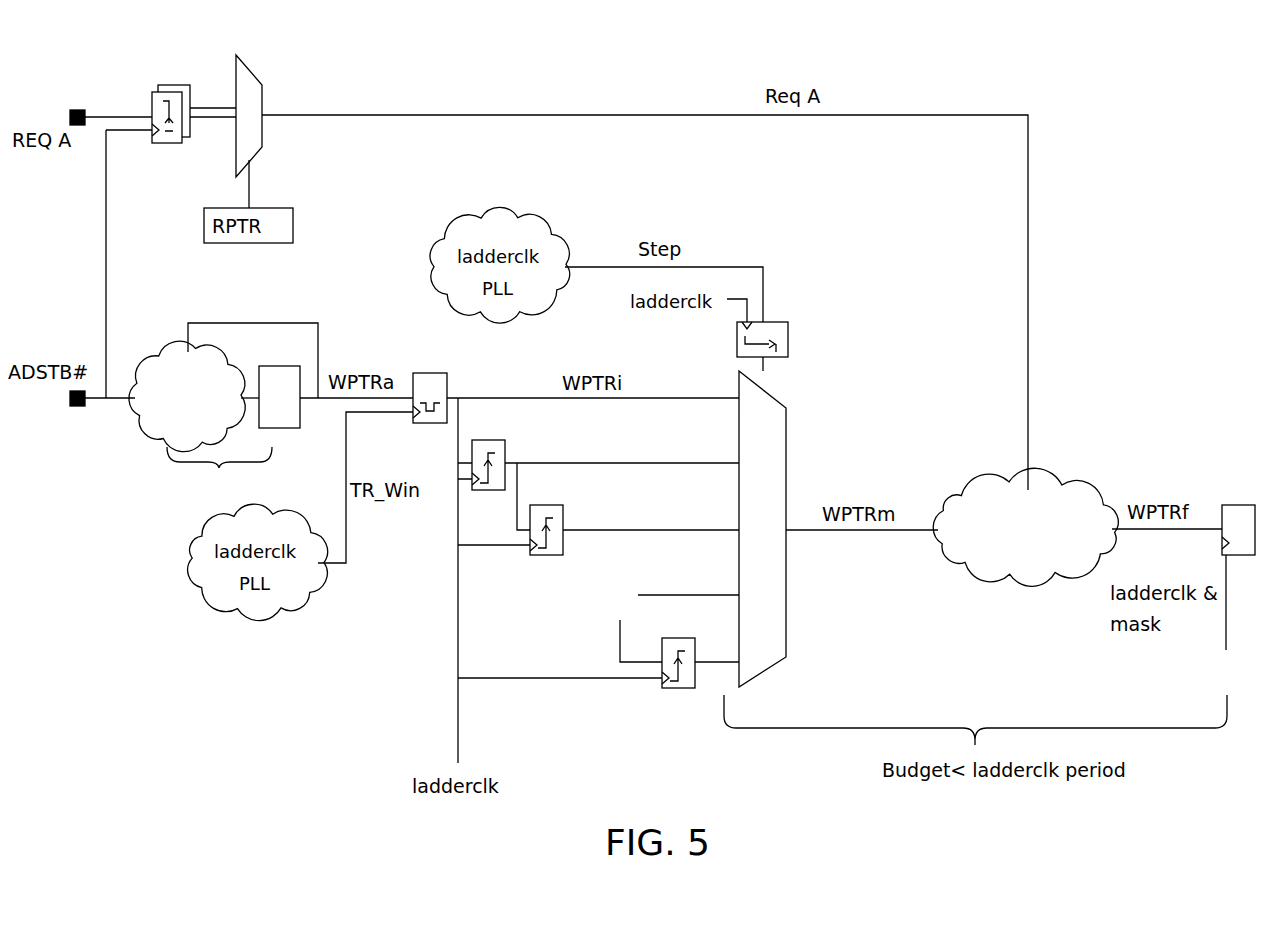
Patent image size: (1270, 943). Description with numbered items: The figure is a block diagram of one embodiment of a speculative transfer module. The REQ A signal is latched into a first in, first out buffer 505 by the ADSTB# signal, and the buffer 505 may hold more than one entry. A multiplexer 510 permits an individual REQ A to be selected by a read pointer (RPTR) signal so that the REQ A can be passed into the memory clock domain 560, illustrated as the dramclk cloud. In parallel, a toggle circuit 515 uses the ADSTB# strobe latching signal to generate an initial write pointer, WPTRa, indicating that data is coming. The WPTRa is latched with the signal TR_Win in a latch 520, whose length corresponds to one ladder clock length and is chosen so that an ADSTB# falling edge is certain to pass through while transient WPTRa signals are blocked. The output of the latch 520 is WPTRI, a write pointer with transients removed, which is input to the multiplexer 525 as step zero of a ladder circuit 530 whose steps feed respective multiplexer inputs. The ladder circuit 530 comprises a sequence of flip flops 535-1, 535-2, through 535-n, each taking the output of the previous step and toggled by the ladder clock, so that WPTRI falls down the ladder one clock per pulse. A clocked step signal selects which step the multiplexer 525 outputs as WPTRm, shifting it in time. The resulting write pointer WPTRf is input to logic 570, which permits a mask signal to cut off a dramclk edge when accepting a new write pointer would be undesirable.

The first in, first out (FIFO) buffer 505 is at (172, 85).
The multiplexer 510 is at (249, 70).
The toggle circuit 515 is at (223, 412).
The latch 520 is at (432, 373).
The multiplexer 525 is at (786, 452).
The ladder circuit 530 is at (416, 660).
The flip flop 535-1 is at (490, 440).
The flip flop 535-2 is at (548, 505).
The flip flop 535-n is at (678, 688).
The memory clock domain 560 is at (1071, 480).
The logic 570 is at (1212, 508).